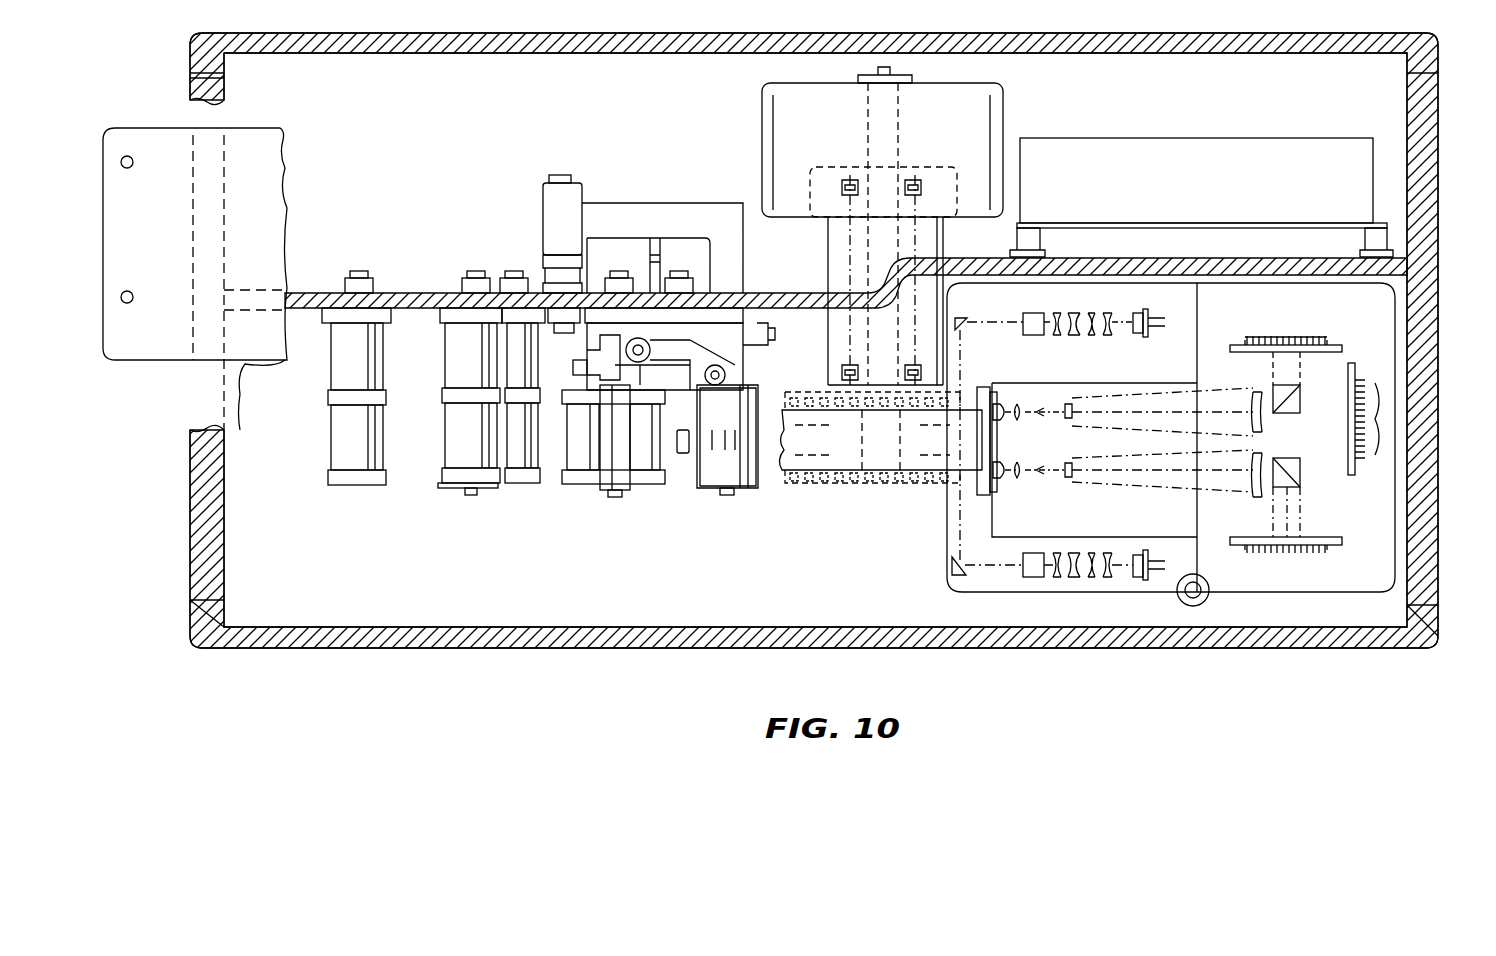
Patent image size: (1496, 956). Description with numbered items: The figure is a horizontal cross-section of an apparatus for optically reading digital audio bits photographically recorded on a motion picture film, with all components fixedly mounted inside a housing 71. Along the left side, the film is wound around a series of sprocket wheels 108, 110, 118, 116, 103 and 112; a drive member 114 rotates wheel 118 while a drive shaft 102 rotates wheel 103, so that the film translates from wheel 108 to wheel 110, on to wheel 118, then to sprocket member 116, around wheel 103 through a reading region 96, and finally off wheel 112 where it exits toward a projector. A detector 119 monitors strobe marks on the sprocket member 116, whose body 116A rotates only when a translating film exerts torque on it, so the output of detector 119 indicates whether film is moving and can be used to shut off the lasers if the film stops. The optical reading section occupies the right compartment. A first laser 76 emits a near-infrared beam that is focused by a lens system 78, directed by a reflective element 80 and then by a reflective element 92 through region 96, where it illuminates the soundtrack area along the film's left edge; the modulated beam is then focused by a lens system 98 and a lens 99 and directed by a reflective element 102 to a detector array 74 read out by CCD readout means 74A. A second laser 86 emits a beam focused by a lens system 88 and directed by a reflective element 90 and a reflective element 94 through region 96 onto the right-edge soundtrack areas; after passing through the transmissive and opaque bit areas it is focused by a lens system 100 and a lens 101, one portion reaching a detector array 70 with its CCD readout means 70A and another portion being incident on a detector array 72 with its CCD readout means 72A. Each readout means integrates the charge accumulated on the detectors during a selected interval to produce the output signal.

The housing 71 is at (690, 650).
The sprocket wheel 108 is at (333, 452).
The sprocket wheel 110 is at (455, 445).
The sprocket wheel 112 is at (530, 483).
The drive member 114 is at (575, 470).
The sprocket wheel 118 is at (610, 470).
The detector 119 is at (680, 455).
The sprocket wheel 116 is at (740, 395).
The cylinder body 116A is at (728, 455).
The drive shaft 102 is at (855, 462).
The sprocket wheel 103 is at (880, 462).
The reflective element 92 is at (947, 441).
The reflective element 94 is at (945, 447).
The region 96 is at (995, 443).
The reflective element 90 is at (962, 318).
The lens system 88 is at (1115, 340).
The laser 86 is at (1140, 313).
The lens system 100 is at (1059, 395).
The lens system 98 is at (1070, 490).
The lens system 78 is at (1115, 547).
The laser 76 is at (1142, 578).
The reflective element 80 is at (955, 577).
The detector array 70 is at (1238, 345).
The CCD readout means 70A is at (1325, 330).
The lens 101 is at (1253, 395).
The lens 99 is at (1255, 497).
The detector array 72 is at (1388, 340).
The CCD readout means 72A is at (1380, 418).
The detector array 74 is at (1335, 545).
The CCD readout means 74A is at (1325, 560).